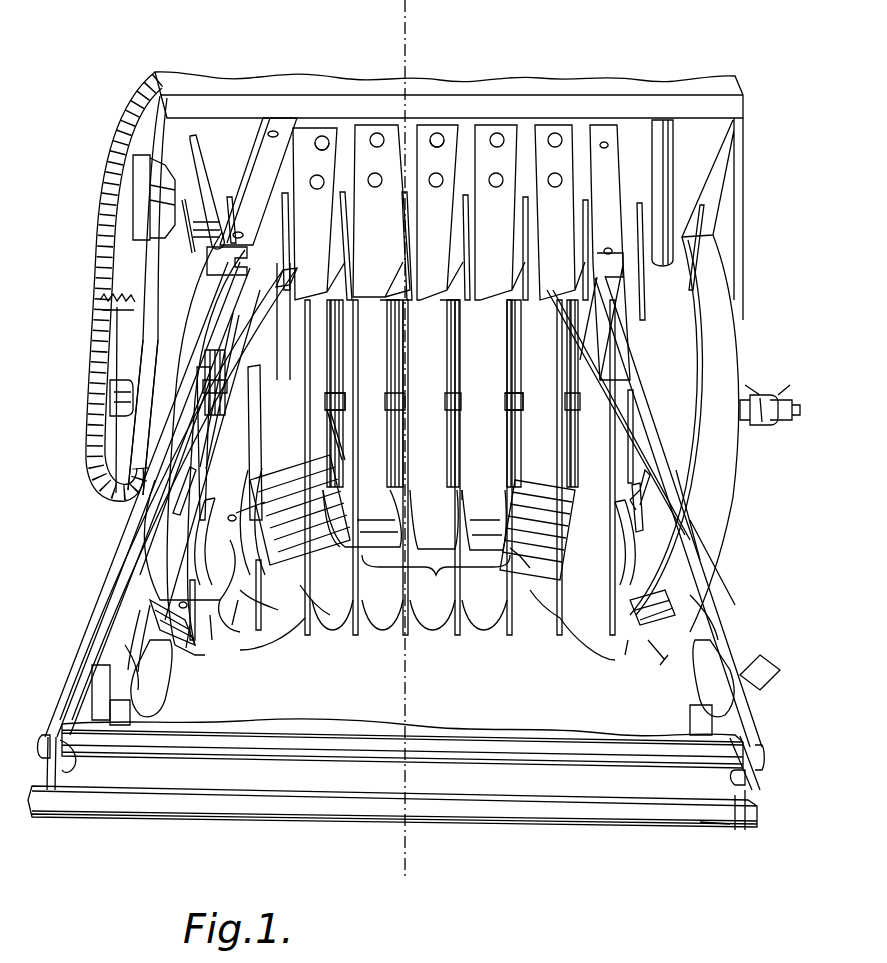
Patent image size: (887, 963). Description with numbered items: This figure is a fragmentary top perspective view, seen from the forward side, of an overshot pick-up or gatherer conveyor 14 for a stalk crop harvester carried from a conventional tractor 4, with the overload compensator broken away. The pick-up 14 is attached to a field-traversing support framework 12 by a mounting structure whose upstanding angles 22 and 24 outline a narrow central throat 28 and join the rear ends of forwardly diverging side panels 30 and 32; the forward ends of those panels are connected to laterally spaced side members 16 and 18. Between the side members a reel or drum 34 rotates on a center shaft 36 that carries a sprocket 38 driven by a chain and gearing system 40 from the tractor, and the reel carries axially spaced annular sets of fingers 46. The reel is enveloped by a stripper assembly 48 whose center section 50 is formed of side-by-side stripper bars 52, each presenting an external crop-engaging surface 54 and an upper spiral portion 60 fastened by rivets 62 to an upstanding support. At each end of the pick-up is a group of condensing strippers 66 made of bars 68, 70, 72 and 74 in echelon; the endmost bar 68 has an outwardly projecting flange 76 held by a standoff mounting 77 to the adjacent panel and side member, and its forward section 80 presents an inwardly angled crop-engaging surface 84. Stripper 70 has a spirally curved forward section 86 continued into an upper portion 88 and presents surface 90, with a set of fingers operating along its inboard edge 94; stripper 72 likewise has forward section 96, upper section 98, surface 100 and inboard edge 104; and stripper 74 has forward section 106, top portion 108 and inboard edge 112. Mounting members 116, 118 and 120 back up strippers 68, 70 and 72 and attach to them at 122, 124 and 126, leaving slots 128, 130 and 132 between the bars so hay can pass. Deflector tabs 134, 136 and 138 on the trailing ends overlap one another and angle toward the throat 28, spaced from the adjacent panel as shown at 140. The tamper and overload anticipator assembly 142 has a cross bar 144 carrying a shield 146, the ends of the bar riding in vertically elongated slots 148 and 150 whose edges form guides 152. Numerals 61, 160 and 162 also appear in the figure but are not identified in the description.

The tractor 4 is at (430, 12).
The support framework 12 is at (740, 103).
The overshot pick-up 14 is at (549, 836).
The side member 16 is at (152, 135).
The side member 18 is at (737, 192).
The upstanding angle 22 is at (265, 162).
The upstanding angle 24 is at (606, 128).
The throat 28 is at (296, 128).
The side panel 30 is at (95, 623).
The side panel 32 is at (720, 650).
The reel 34 is at (406, 407).
The center shaft 36 is at (112, 407).
The sprocket 38 is at (110, 358).
The chain and gearing system 40 is at (80, 314).
The fingers 46 is at (430, 628).
The stripper assembly 48 is at (520, 125).
The center section 50 is at (436, 575).
The stripper bars 52 is at (487, 125).
The crop-engaging surface 54 is at (410, 508).
The upper portion 60 is at (380, 322).
The blade 61 is at (460, 527).
The rivets 62 is at (420, 158).
The end groups of condensing strippers 66 is at (427, 644).
The endmost stripper bar 68 is at (700, 690).
The condensing stripper bar 70 is at (427, 645).
The condensing stripper 72 is at (270, 599).
The condensing stripper 74 is at (430, 593).
The flange 76 is at (718, 730).
The standoff mounting 77 is at (735, 690).
The forward section 80 is at (715, 640).
The crop-engaging surface 84 is at (130, 647).
The forward section 86 is at (190, 655).
The upper portion 88 is at (175, 590).
The crop-engaging surface 90 is at (412, 617).
The inboard edge 94 is at (630, 640).
The forward section 96 is at (262, 590).
The upper section 98 is at (232, 432).
The crop-engaging surface 100 is at (246, 528).
The inboard edge 104 is at (512, 535).
The forward section 106 is at (535, 568).
The top portion 108 is at (305, 262).
The inboard edge 112 is at (510, 487).
The mounting member 116 is at (735, 312).
The mounting member 118 is at (680, 355).
The mounting member 120 is at (255, 335).
The connection 122 is at (145, 618).
The connection 124 is at (190, 540).
The connection 126 is at (330, 488).
The slot 128 is at (650, 550).
The slot 130 is at (595, 500).
The slot 132 is at (515, 408).
The deflector tab 134 is at (700, 625).
The deflector tab 136 is at (650, 493).
The deflector tab 138 is at (548, 355).
The spacing 140 is at (688, 570).
The tamper and overload anticipator assembly 142 is at (341, 834).
The cross bar 144 is at (763, 757).
The shield 146 is at (246, 782).
The slot 148 is at (90, 770).
The slot 150 is at (745, 800).
The guides 152 is at (745, 782).
The diagonal member 160 is at (90, 604).
The diagonal member 162 is at (690, 525).